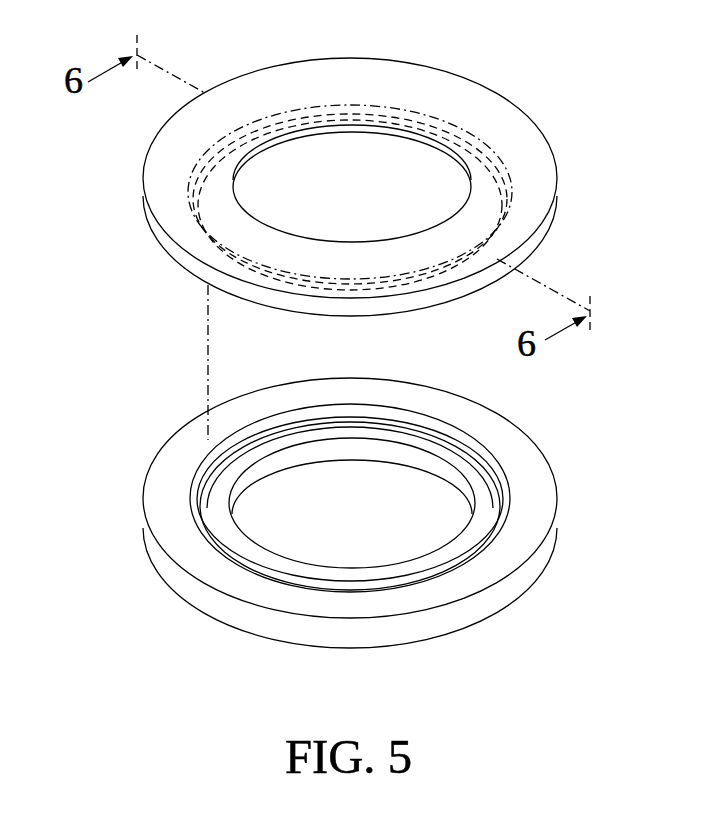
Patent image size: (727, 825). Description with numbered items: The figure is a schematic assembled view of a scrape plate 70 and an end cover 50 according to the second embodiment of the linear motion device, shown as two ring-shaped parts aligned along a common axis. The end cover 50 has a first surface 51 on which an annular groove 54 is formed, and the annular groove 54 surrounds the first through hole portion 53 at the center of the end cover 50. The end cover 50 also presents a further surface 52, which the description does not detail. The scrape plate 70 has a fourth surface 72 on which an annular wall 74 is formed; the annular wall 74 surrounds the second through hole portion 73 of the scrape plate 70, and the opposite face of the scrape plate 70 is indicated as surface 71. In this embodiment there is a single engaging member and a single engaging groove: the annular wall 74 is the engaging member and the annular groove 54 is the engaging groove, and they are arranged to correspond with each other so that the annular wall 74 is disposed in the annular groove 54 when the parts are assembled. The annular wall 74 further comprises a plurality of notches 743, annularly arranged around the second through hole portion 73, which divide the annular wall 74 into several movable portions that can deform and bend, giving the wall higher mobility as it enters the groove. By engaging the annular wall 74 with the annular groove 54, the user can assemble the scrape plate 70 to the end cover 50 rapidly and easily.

The scrape plate 70 is at (350, 190).
The top surface of upper ring 71 is at (283, 80).
The fourth surface 72 is at (174, 272).
The second through hole portion 73 is at (333, 148).
The annular wall 74 is at (413, 306).
The notches 743 is at (309, 308).
The end cover 50 is at (386, 541).
The first surface 51 is at (541, 481).
The outer side surface of lower ring 52 is at (545, 590).
The first through hole portion 53 is at (333, 554).
The annular groove 54 is at (207, 550).